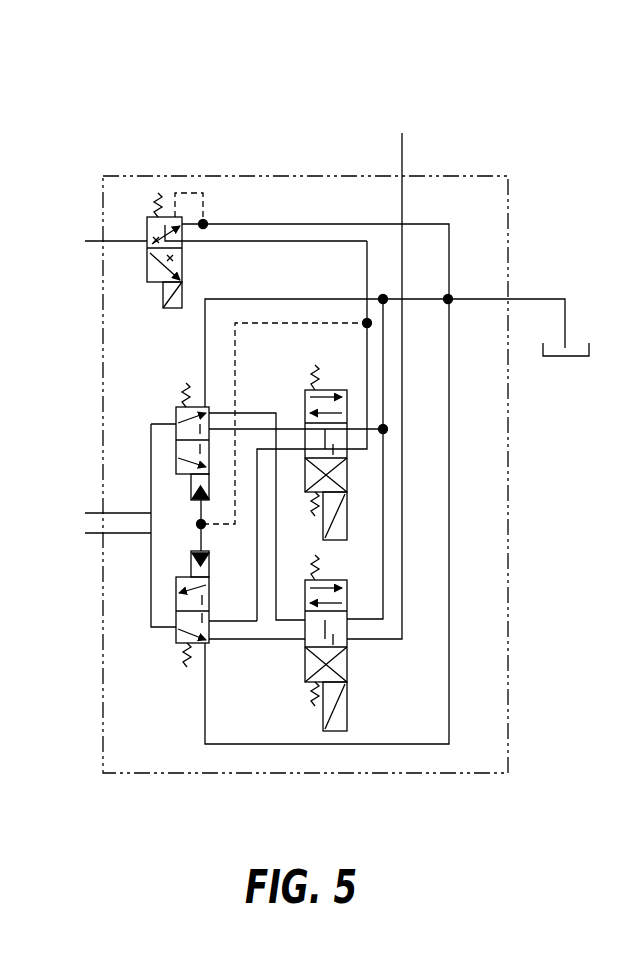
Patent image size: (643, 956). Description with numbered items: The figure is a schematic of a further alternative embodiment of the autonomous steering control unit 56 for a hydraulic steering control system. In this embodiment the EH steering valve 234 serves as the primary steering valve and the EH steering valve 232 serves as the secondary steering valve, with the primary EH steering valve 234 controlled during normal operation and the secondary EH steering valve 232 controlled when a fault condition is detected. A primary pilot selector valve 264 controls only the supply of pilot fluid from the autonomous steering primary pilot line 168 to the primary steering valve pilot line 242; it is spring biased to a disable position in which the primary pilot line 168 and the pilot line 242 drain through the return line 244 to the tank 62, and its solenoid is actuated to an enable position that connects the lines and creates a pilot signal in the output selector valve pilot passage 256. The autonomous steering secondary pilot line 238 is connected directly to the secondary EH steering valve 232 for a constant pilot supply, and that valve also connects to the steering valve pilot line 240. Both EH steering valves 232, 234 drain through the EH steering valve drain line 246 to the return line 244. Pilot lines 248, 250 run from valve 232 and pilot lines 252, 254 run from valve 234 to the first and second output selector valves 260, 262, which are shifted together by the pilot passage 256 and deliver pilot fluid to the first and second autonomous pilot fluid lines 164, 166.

The autonomous steering control unit 56 is at (184, 110).
The tank 62 is at (565, 357).
The first autonomous pilot fluid line 164 is at (85, 533).
The second autonomous pilot fluid line 166 is at (85, 513).
The autonomous steering primary pilot line 168 is at (96, 239).
The secondary EH steering valve 232 is at (348, 673).
The primary EH steering valve 234 is at (333, 390).
The autonomous steering secondary pilot line 238 is at (403, 140).
The steering valve pilot line 240 is at (403, 618).
The primary steering valve pilot line 242 is at (368, 372).
The return line 244 is at (537, 300).
The EH steering valve drain line 246 is at (384, 550).
The first primary-to-output selector valve pilot line 248 is at (280, 642).
The second primary-to-output selector valve pilot line 250 is at (237, 413).
The first secondary-to-output selector valve pilot line 252 is at (233, 622).
The second secondary-to-output selector valve pilot line 254 is at (291, 420).
The output selector valve pilot passage 256 is at (290, 322).
The first output selector valve 260 is at (175, 637).
The second output selector valve 262 is at (175, 407).
The primary pilot selector valve 264 is at (147, 268).